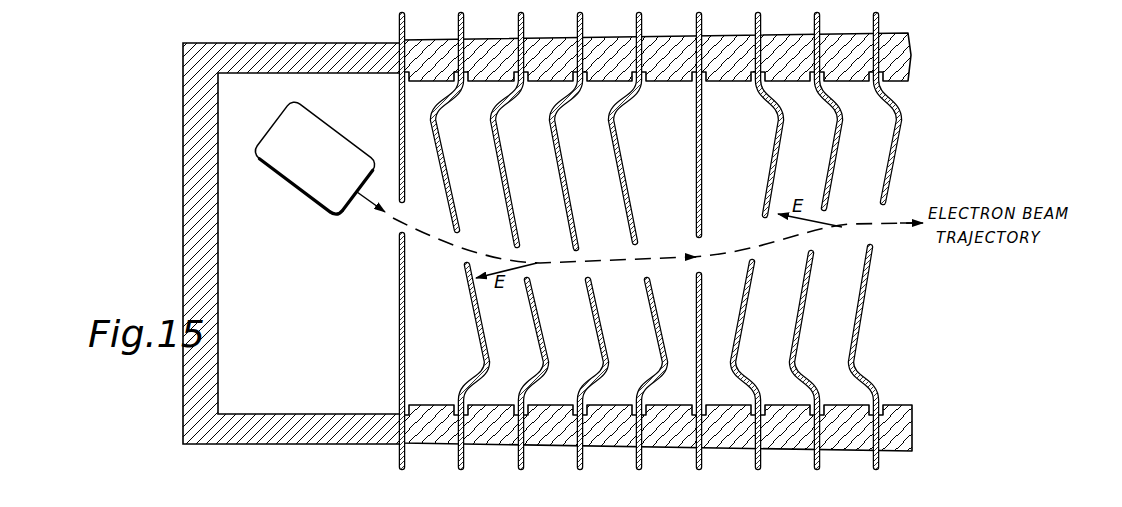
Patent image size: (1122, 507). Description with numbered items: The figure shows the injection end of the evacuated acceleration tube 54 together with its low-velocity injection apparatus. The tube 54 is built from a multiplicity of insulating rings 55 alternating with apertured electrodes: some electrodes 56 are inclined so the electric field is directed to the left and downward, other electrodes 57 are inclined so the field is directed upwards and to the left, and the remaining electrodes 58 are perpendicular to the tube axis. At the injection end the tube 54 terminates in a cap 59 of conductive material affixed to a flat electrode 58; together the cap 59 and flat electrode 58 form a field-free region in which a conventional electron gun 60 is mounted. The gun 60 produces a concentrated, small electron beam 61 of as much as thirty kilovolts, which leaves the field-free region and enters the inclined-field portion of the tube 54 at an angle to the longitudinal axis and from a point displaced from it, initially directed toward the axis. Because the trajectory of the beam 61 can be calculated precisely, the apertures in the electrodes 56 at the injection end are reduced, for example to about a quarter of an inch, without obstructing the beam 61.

The acceleration tube 54 is at (621, 452).
The insulating rings 55 is at (497, 448).
The electrodes 56 is at (461, 468).
The electrodes 57 is at (758, 468).
The flat electrode 58 is at (403, 468).
The cap 59 is at (183, 202).
The electron gun 60 is at (321, 203).
The electron beam 61 is at (434, 236).